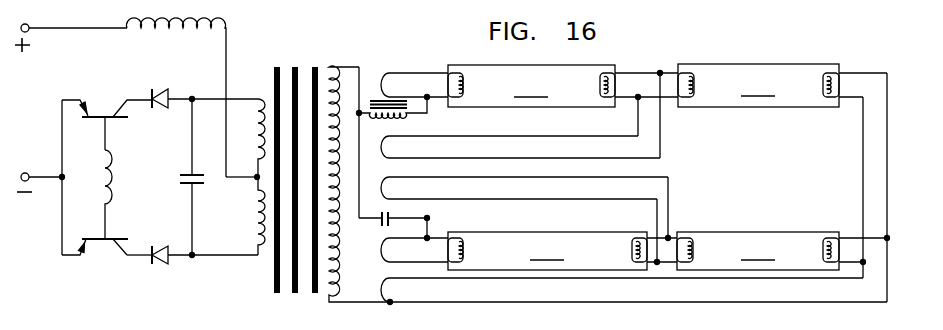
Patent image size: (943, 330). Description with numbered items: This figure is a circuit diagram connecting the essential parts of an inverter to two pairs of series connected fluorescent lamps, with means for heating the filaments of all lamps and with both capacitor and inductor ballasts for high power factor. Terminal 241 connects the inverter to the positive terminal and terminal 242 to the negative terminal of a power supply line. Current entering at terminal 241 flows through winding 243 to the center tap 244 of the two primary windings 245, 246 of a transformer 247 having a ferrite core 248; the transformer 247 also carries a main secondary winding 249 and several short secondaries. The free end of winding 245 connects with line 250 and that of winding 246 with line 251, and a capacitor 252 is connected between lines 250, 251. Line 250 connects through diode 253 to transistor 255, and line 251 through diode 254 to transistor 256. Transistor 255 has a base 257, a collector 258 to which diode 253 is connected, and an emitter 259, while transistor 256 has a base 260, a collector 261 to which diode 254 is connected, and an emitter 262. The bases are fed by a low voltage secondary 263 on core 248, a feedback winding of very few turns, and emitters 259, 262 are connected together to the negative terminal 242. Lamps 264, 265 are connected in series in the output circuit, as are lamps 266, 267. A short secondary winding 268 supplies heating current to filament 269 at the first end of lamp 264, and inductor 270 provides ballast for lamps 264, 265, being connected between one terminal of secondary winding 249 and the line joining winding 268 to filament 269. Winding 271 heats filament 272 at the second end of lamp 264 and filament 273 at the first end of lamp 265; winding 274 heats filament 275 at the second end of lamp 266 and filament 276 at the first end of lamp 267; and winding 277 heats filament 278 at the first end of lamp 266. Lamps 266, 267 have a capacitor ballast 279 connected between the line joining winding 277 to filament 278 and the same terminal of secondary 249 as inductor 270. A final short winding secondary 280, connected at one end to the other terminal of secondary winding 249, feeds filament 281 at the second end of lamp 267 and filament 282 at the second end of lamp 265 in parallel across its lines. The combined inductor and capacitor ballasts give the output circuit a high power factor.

The terminal 241 is at (28, 24).
The terminal 242 is at (22, 174).
The winding 243 is at (150, 34).
The center tap 244 is at (254, 181).
The winding 245 is at (255, 106).
The winding 246 is at (257, 233).
The transformer 247 is at (281, 165).
The ferrite core 248 is at (272, 296).
The main secondary winding 249 is at (335, 70).
The line 250 is at (218, 80).
The line 251 is at (230, 258).
The capacitor 252 is at (185, 174).
The diode 253 is at (157, 88).
The diode 254 is at (153, 246).
The transistor 255 is at (111, 98).
The transistor 256 is at (105, 255).
The base 257 is at (116, 122).
The collector 258 is at (128, 106).
The emitter 259 is at (86, 101).
The base 260 is at (118, 234).
The collector 261 is at (117, 252).
The emitter 262 is at (89, 257).
The low voltage secondary 263 is at (114, 176).
The lamp 264 is at (563, 76).
The lamp 265 is at (782, 73).
The lamp 266 is at (562, 238).
The lamp 267 is at (782, 238).
The short secondary winding 268 is at (390, 80).
The filament 269 is at (461, 82).
The inductor 270 is at (394, 118).
The short secondary winding 271 is at (393, 148).
The filament 272 is at (604, 82).
The filament 273 is at (690, 80).
The short winding secondary 274 is at (392, 188).
The filament 275 is at (632, 247).
The filament 276 is at (690, 247).
The short winding secondary 277 is at (385, 252).
The filament 278 is at (462, 247).
The capacitor ballast 279 is at (392, 213).
The short winding secondary 280 is at (392, 289).
The filament 281 is at (827, 247).
The filament 282 is at (827, 80).